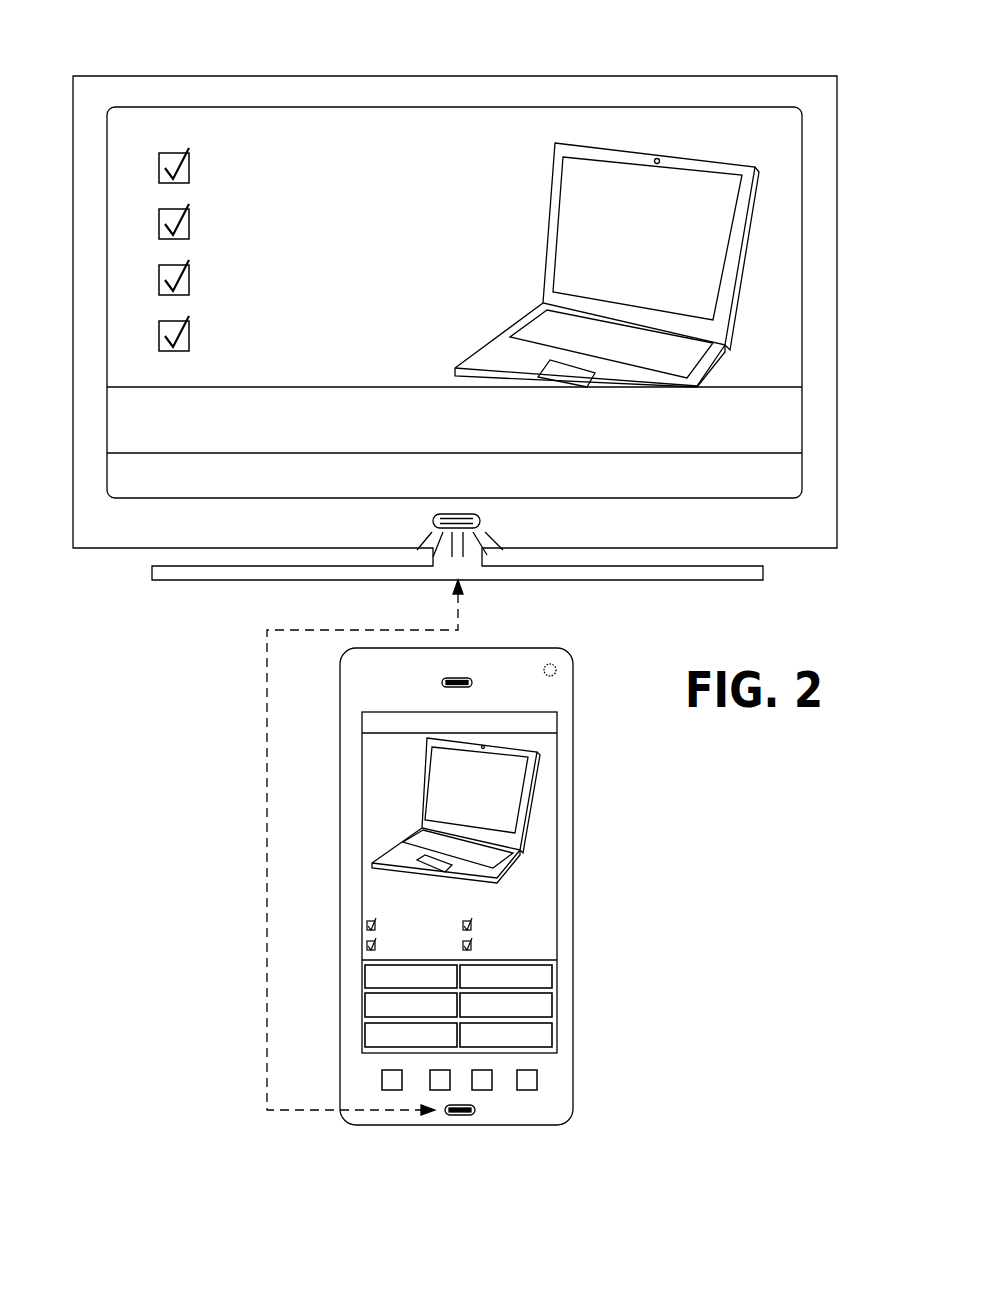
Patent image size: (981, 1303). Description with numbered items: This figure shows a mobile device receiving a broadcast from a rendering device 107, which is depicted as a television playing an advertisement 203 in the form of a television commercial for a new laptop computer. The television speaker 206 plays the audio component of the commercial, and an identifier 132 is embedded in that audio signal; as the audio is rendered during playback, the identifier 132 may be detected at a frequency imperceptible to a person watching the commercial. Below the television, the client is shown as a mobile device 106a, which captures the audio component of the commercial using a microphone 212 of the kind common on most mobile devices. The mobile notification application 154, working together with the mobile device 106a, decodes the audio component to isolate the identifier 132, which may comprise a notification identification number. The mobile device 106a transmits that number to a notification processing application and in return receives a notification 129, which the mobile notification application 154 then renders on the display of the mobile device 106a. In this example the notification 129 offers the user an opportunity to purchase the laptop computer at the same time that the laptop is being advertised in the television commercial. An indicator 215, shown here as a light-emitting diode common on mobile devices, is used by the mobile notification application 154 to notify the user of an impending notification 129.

The rendering device 107 is at (635, 76).
The advertisement 203 is at (479, 192).
The television speaker 206 is at (481, 519).
The identifier 132 is at (506, 564).
The mobile device 106a is at (573, 760).
The indicator 215 is at (557, 668).
The mobile notification application 154 is at (539, 720).
The notification 129 is at (547, 853).
The microphone 212 is at (499, 1108).